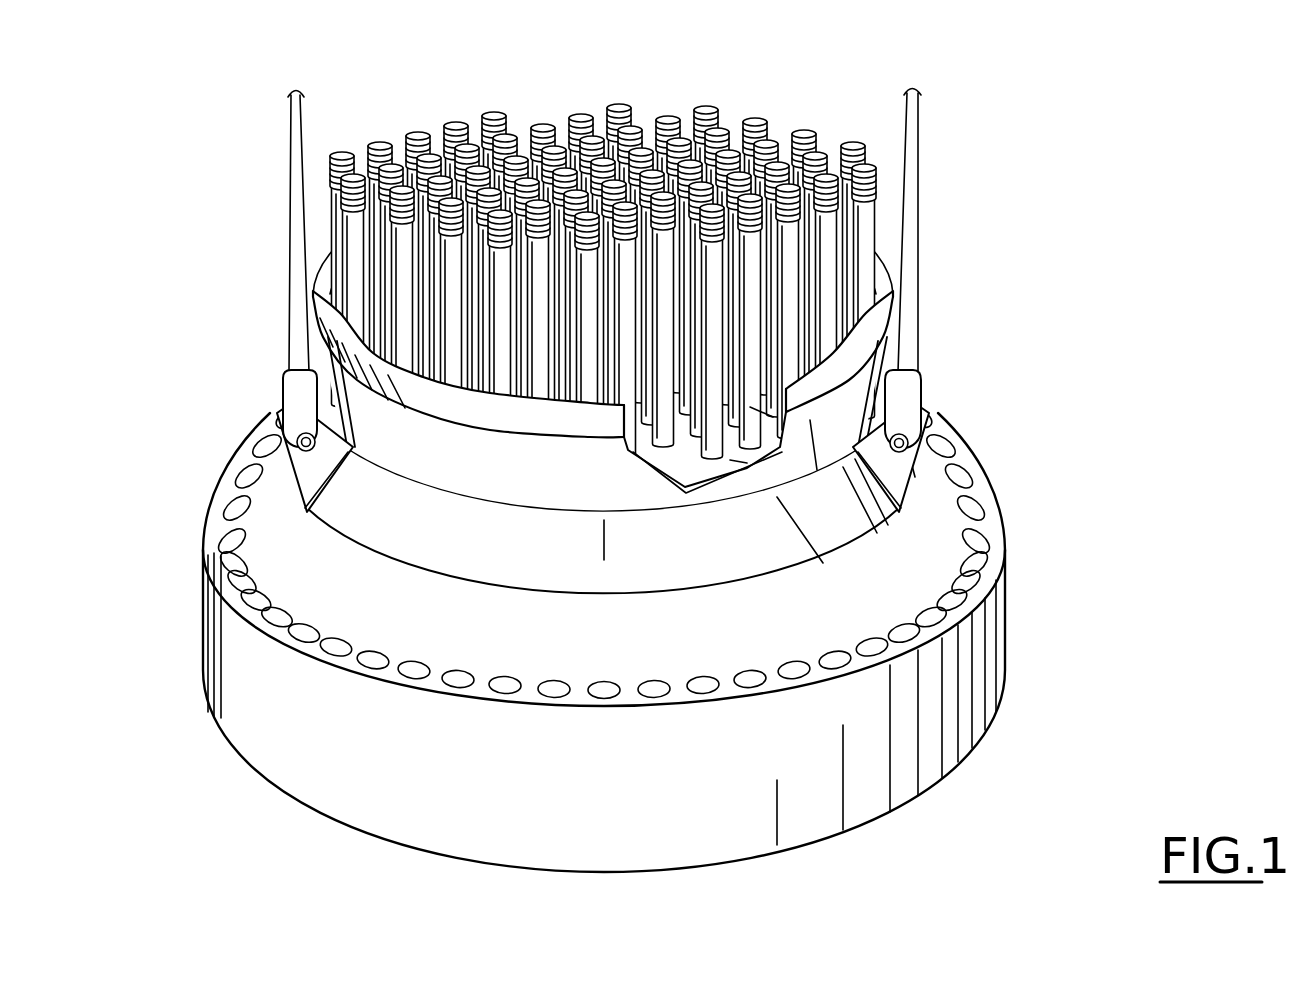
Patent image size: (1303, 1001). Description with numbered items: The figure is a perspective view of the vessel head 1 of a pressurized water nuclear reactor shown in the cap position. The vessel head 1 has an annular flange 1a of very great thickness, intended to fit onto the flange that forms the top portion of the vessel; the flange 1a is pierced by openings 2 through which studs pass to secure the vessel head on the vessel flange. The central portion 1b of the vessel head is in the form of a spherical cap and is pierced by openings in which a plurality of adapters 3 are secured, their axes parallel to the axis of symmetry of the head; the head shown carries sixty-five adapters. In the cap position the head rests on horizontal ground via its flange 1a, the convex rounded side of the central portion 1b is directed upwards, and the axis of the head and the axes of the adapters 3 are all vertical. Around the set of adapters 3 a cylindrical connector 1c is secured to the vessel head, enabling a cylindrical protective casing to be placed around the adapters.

The vessel head 1 is at (591, 466).
The annular flange 1a is at (935, 525).
The central portion 1b is at (528, 563).
The cylindrical connector 1c is at (603, 280).
The openings 2 is at (927, 602).
The adapters 3 is at (742, 132).